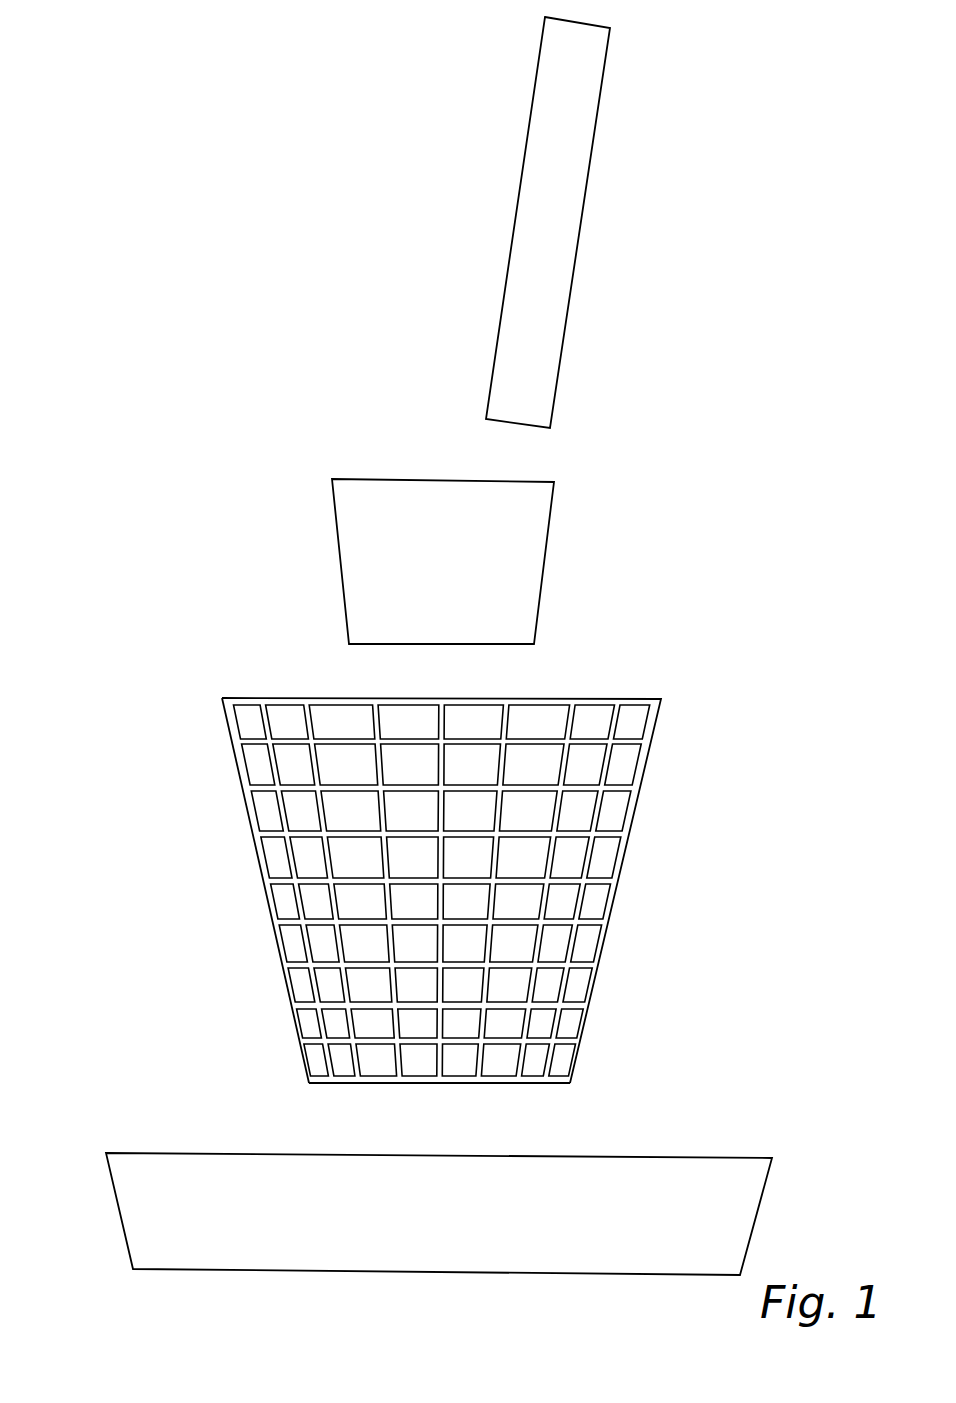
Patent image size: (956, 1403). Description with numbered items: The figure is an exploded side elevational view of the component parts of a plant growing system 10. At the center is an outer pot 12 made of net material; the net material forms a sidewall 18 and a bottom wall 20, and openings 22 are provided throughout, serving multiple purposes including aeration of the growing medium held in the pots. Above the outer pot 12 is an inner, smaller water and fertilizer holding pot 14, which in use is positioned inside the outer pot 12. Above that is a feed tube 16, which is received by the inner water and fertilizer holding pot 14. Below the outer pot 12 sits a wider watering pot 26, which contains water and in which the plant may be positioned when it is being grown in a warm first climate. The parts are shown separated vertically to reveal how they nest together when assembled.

The plant growing system 10 is at (176, 386).
The outer pot 12 is at (243, 790).
The inner water and fertilizer holding pot 14 is at (338, 537).
The feed tube 16 is at (528, 138).
The sidewall 18 is at (261, 876).
The bottom wall 20 is at (442, 1083).
The openings 22 is at (368, 982).
The watering pot 26 is at (163, 1153).